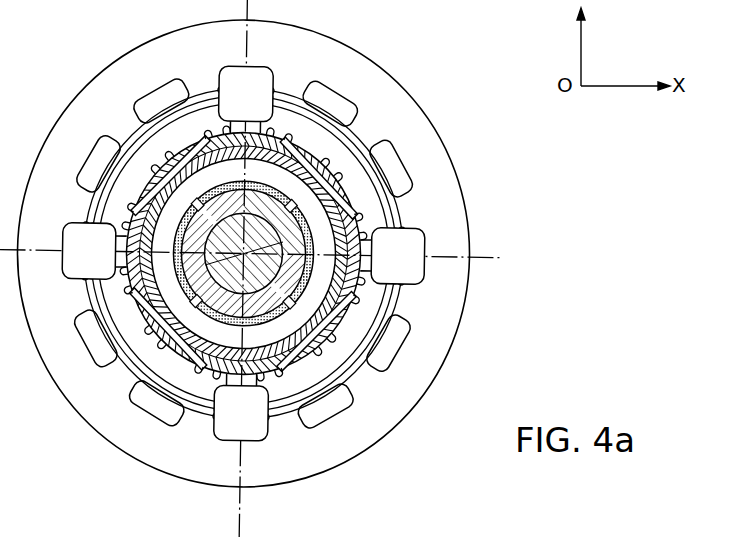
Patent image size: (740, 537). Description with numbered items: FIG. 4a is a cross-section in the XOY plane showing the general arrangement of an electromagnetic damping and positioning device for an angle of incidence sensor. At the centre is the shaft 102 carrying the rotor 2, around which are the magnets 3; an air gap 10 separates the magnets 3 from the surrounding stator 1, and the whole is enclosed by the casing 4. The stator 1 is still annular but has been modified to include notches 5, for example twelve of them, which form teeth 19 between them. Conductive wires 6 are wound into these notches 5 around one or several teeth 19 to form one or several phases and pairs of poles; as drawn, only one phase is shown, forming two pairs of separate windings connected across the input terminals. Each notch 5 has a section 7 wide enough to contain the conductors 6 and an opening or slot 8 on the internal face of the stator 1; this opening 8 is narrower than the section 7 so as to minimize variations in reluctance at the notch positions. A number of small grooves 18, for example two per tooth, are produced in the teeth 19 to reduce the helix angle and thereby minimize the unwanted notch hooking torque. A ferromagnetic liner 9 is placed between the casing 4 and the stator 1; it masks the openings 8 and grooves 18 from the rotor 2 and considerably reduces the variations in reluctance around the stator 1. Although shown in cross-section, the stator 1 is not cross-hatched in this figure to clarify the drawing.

The stator 1 is at (417, 104).
The rotor 2 is at (185, 283).
The magnets 3 is at (302, 290).
The casing 4 is at (293, 328).
The notches 5 is at (82, 160).
The conductive wires 6 is at (198, 84).
The section 7 is at (64, 264).
The opening or slot 8 is at (124, 246).
The ferromagnetic liner 9 is at (384, 180).
The air gap 10 is at (392, 221).
The small grooves 18 is at (180, 182).
The teeth 19 is at (157, 157).
The shaft 102 is at (128, 369).